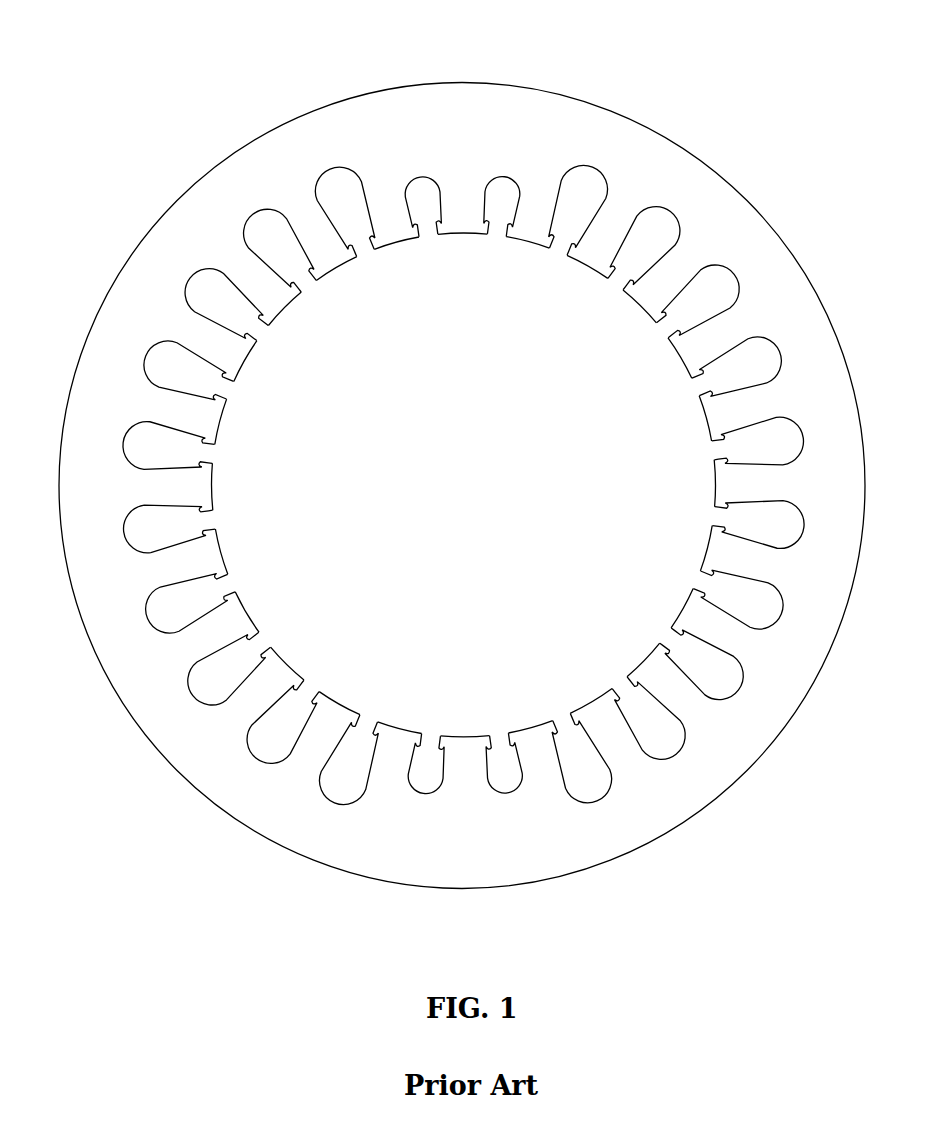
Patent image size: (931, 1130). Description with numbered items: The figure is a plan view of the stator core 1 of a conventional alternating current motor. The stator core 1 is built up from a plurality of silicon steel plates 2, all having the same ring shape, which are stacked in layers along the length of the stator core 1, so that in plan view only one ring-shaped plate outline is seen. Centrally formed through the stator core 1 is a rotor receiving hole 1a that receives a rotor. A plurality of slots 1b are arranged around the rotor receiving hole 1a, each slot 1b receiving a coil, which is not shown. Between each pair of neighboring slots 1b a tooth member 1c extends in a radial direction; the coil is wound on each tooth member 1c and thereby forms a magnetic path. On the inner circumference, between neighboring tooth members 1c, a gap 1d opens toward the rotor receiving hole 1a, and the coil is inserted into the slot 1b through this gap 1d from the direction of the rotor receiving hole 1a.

The stator core 1 is at (688, 100).
The rotor receiving hole 1a is at (473, 485).
The slot 1b is at (342, 205).
The tooth member 1c is at (656, 286).
The gap 1d is at (582, 272).
The silicon steel plate 2 is at (240, 171).